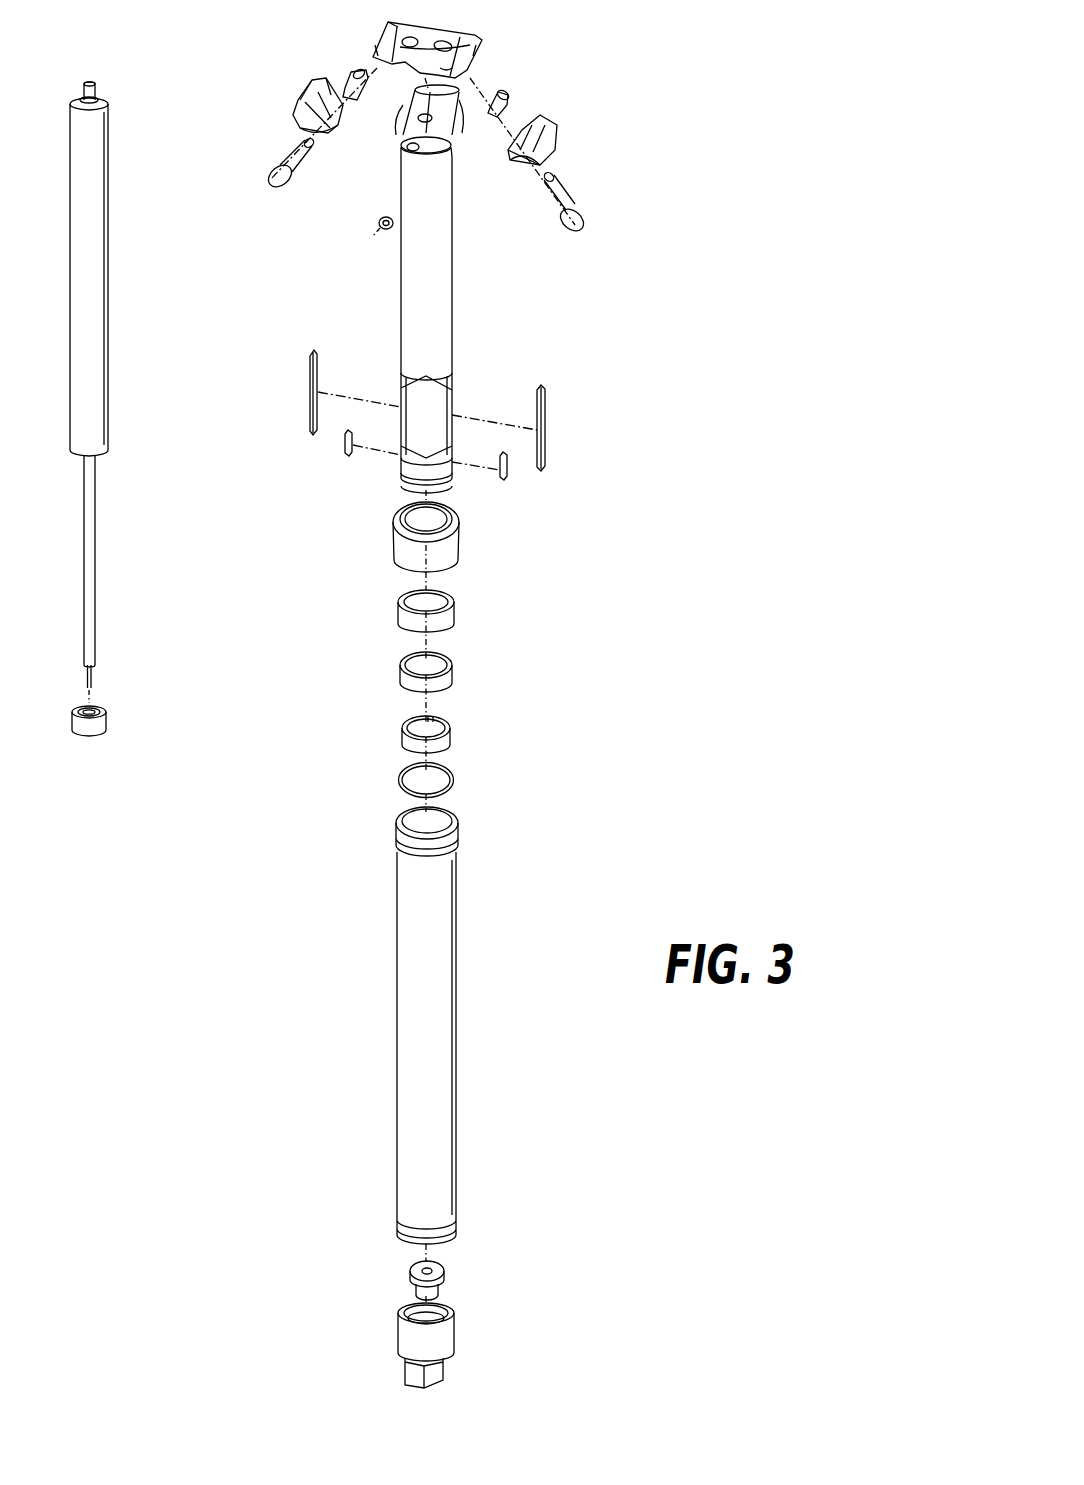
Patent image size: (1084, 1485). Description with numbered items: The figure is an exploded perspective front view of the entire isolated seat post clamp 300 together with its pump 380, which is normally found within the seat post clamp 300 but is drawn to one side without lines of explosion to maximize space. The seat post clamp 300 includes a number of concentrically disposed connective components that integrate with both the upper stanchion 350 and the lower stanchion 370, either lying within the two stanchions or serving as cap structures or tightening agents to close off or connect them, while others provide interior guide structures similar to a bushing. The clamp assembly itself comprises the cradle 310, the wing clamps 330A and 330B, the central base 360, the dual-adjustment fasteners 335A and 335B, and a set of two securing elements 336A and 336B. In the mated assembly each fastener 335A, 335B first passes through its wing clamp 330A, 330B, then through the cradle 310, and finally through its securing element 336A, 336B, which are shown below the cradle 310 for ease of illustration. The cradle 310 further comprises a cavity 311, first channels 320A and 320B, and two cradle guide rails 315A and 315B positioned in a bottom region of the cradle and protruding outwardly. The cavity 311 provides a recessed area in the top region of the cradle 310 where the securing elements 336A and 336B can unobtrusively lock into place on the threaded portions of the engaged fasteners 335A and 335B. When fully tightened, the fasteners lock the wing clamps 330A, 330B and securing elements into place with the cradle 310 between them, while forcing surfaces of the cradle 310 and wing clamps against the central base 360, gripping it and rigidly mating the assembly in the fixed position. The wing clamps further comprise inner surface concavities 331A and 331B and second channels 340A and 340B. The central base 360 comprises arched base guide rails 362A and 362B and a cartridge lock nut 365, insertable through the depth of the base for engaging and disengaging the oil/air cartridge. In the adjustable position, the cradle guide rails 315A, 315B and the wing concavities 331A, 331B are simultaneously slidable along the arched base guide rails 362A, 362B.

The seat post clamp 300 is at (815, 75).
The cradle 310 is at (364, 28).
The cavity 311 is at (447, 45).
The cradle guide rail 315A is at (398, 78).
The cradle guide rail 315B is at (452, 78).
The first channel 320A is at (377, 68).
The first channel 320B is at (480, 57).
The wing clamp 330A is at (290, 91).
The wing clamp 330B is at (567, 160).
The inner surface concavity 331A is at (333, 125).
The inner surface concavity 331B is at (513, 145).
The dual-adjustment fastener 335A is at (270, 176).
The dual-adjustment fastener 335B is at (587, 220).
The securing element 336A is at (347, 80).
The securing element 336B is at (508, 98).
The second channel 340A is at (297, 110).
The second channel 340B is at (557, 133).
The upper stanchion 350 is at (430, 300).
The central base 360 is at (463, 137).
The arched base guide rail 362A is at (402, 107).
The arched base guide rail 362B is at (460, 102).
The cartridge lock nut 365 is at (378, 231).
The lower stanchion 370 is at (422, 962).
The pump 380 is at (146, 425).